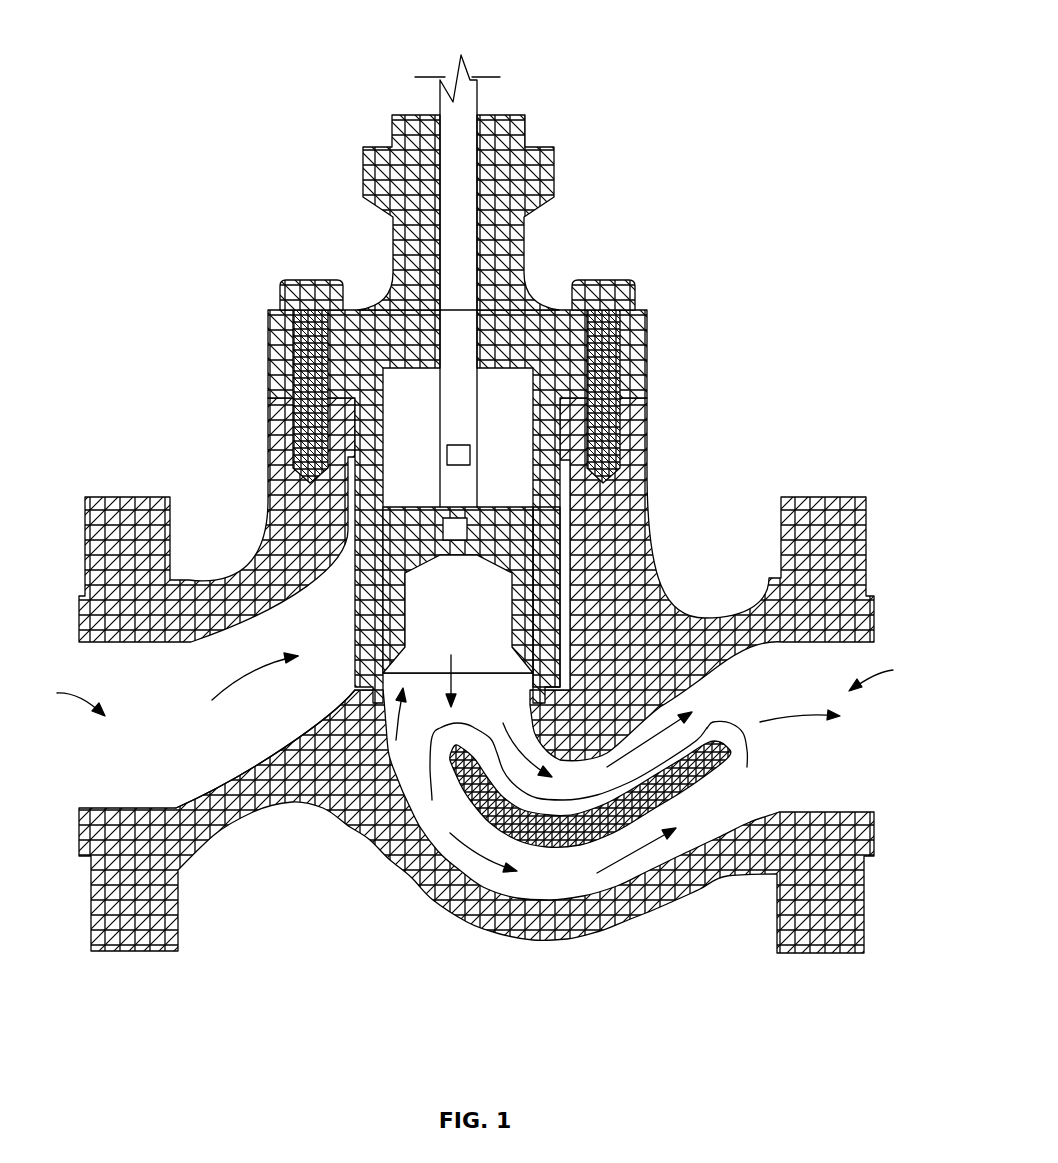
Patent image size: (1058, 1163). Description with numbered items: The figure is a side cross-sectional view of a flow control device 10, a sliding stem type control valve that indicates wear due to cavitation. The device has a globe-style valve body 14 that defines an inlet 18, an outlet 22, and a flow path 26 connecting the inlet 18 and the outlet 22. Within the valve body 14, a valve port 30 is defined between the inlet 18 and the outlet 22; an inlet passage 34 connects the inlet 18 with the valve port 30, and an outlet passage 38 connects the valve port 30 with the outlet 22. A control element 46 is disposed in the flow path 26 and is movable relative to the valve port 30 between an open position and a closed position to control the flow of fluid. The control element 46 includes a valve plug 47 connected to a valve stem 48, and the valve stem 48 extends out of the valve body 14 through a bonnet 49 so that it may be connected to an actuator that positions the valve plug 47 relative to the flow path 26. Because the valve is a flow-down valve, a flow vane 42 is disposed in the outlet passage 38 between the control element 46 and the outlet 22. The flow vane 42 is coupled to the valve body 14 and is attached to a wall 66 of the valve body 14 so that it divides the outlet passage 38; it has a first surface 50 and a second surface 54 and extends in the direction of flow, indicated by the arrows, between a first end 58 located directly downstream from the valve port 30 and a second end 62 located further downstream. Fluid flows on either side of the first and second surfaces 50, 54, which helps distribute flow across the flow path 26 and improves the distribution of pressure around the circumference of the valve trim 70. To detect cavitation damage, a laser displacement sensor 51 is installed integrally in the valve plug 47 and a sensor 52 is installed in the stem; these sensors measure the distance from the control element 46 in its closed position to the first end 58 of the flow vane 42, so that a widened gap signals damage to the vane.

The flow control device 10 is at (473, 505).
The valve body 14 is at (632, 465).
The inlet 18 is at (63, 703).
The outlet 22 is at (887, 674).
The flow path 26 is at (250, 733).
The valve port 30 is at (300, 810).
The inlet passage 34 is at (203, 758).
The outlet passage 38 is at (667, 840).
The flow vane 42 is at (543, 832).
The control element 46 is at (518, 603).
The valve plug 47 is at (511, 527).
The valve stem 48 is at (460, 257).
The bonnet 49 is at (532, 168).
The first surface 50 is at (708, 727).
The laser displacement sensor 51 is at (443, 528).
The sensor 52 is at (450, 445).
The second surface 54 is at (433, 830).
The first end 58 is at (440, 747).
The second end 62 is at (730, 753).
The wall 66 is at (790, 686).
The valve trim 70 is at (553, 557).